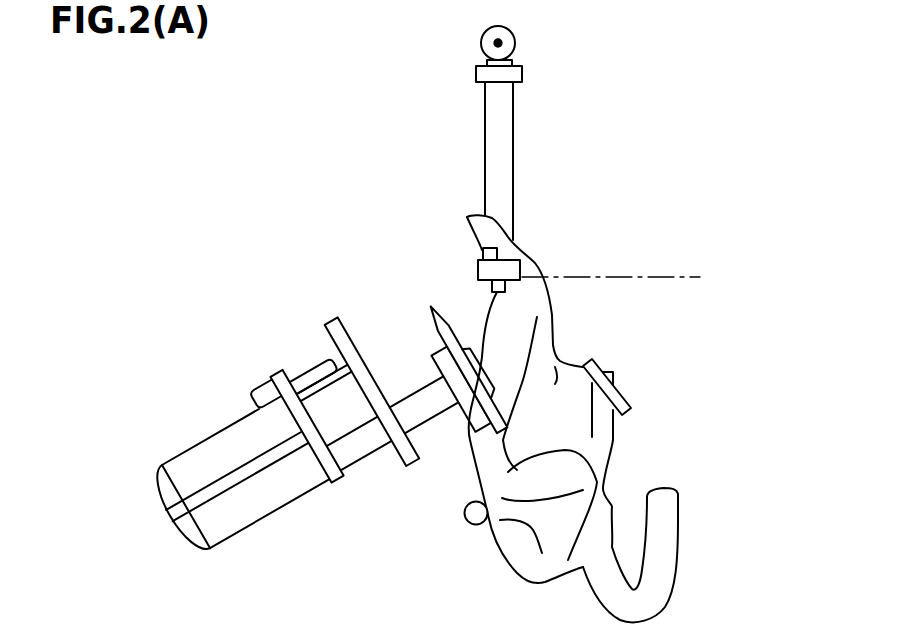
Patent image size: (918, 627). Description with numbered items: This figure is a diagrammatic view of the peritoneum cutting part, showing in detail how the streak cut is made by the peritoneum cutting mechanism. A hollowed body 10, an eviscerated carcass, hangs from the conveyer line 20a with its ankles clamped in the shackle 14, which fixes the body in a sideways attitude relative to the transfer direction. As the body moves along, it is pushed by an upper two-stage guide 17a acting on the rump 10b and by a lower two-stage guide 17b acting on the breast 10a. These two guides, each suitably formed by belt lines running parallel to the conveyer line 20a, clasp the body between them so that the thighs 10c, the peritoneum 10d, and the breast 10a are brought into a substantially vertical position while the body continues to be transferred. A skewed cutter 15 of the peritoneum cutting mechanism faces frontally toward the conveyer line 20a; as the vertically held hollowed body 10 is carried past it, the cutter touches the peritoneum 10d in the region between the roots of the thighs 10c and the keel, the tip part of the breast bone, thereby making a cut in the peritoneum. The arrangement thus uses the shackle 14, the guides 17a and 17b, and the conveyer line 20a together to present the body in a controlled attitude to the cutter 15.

The hollowed body 10 is at (663, 353).
The breast 10a is at (497, 542).
The rump 10b is at (578, 363).
The thighs 10c is at (495, 315).
The peritoneum 10d is at (490, 425).
The shackle 14 is at (507, 163).
The skewed cutter 15 is at (431, 321).
The upper two-stage guide 17a is at (628, 402).
The lower two-stage guide 17b is at (464, 512).
The conveyer line 20a is at (502, 43).